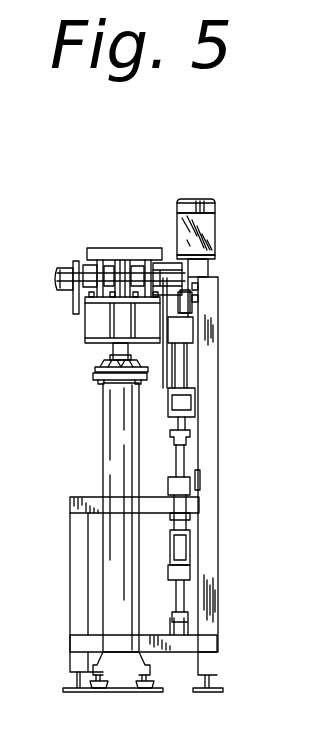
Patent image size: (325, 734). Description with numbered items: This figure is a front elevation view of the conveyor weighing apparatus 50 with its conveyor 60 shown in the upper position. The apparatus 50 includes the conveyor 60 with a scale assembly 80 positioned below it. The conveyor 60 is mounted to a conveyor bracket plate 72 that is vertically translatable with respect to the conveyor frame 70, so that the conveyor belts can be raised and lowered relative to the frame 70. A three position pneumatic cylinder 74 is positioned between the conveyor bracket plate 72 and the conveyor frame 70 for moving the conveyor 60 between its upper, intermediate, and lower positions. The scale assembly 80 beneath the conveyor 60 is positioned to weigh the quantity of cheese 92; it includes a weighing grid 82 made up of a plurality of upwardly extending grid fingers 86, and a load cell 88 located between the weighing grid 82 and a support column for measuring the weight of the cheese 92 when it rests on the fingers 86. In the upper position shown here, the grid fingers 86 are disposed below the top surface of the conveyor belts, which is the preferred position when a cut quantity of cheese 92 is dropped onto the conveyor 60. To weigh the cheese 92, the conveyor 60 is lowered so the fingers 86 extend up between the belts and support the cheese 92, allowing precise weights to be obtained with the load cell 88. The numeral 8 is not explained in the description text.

The apparatus frame 8 is at (103, 478).
The conveyor weighing apparatus 50 is at (233, 334).
The conveyor 60 is at (48, 274).
The conveyor frame 70 is at (213, 593).
The conveyor bracket plate 72 is at (195, 393).
The three position pneumatic cylinder 74 is at (190, 548).
The scale assembly 80 is at (97, 443).
The weighing grid 82 is at (180, 316).
The grid fingers 86 is at (86, 323).
The load cell 88 is at (133, 352).
The cheese 92 is at (105, 247).